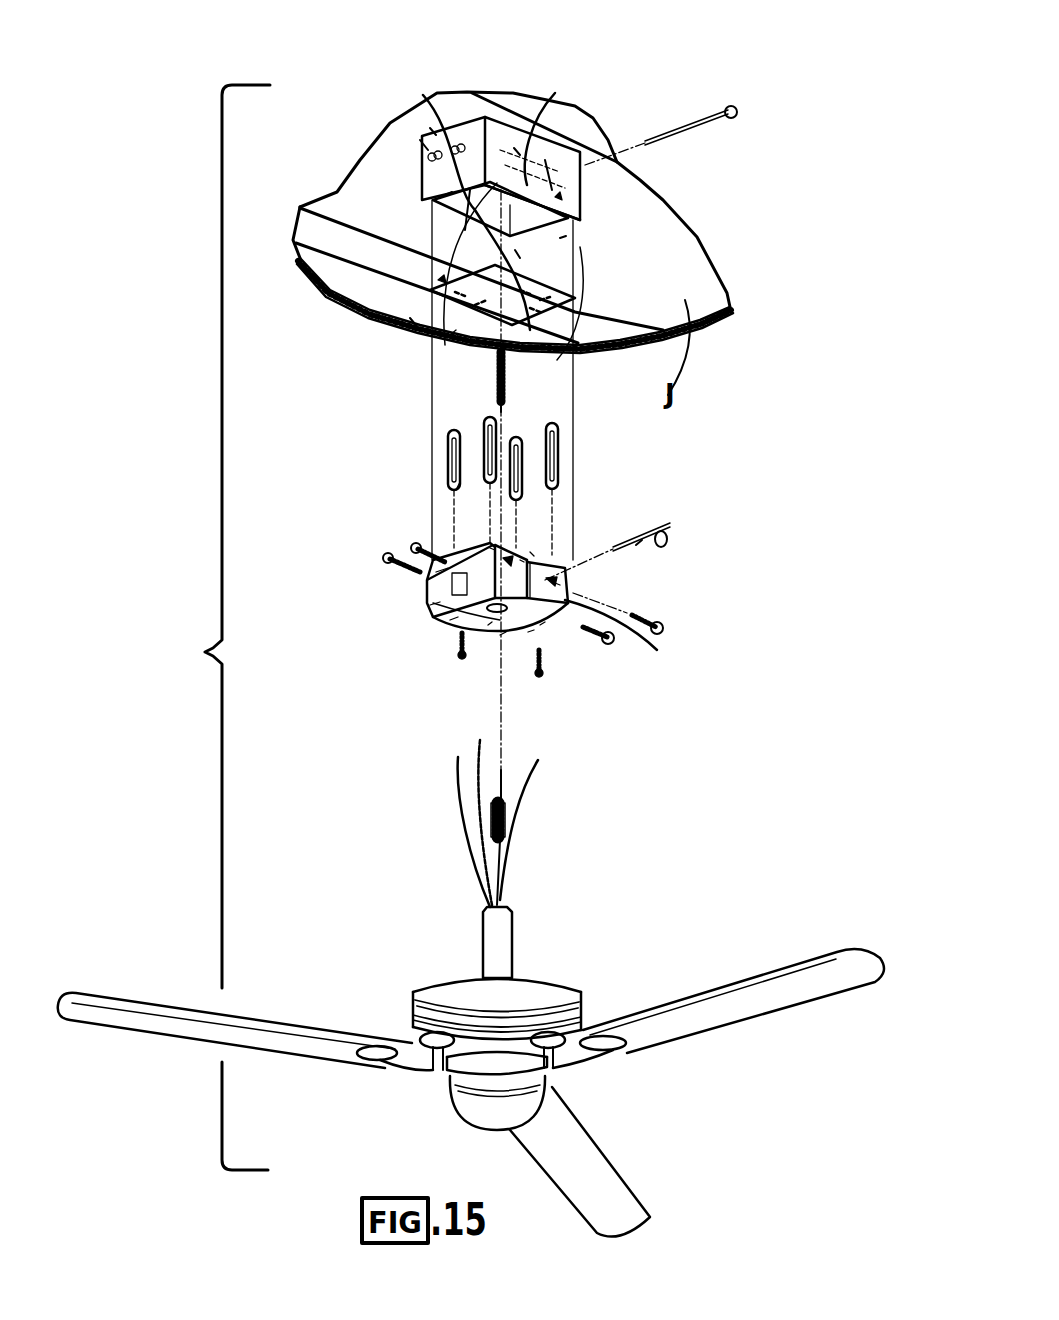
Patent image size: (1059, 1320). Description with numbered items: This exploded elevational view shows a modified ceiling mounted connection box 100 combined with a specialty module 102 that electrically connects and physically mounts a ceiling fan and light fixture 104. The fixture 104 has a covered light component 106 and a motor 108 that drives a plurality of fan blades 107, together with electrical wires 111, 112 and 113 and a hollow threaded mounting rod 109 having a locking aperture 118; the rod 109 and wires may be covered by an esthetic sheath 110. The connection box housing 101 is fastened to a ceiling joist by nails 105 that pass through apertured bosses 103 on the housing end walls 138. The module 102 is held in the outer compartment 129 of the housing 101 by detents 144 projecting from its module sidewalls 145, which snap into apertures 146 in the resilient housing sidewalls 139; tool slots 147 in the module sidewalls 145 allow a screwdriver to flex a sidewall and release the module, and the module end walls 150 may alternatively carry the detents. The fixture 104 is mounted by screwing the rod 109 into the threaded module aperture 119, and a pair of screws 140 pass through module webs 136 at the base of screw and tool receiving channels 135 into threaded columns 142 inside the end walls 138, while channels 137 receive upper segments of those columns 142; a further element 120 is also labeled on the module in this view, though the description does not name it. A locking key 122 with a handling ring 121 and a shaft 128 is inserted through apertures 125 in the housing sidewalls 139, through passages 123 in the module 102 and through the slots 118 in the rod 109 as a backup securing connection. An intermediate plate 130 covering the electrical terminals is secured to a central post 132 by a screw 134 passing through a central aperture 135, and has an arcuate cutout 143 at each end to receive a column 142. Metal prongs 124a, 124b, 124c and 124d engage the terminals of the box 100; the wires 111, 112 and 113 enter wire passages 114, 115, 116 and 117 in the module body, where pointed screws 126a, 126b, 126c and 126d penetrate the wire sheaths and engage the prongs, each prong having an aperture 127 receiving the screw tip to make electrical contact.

The ceiling mounted connection box 100 is at (617, 167).
The connection box housing 101 is at (472, 112).
The specialty module 102 is at (690, 490).
The apertured bosses 103 is at (428, 160).
The ceiling fan and light fixture 104 is at (568, 965).
The nails 105 is at (690, 122).
The covered light component 106 is at (538, 1092).
The fan blades 107 is at (680, 1042).
The motor 108 is at (427, 998).
The threaded mounting rod 109 is at (503, 862).
The esthetic sheath 110 is at (483, 930).
The electrical wire 111 is at (475, 870).
The electrical wire 112 is at (470, 790).
The electrical wire 113 is at (530, 806).
The wire passage 114 is at (488, 625).
The wire passage 115 is at (490, 548).
The wire passage 116 is at (500, 638).
The wire passage 117 is at (540, 625).
The locking aperture 118 is at (508, 818).
The threaded module aperture 119 is at (492, 614).
The bracket lip 120 is at (450, 620).
The handling ring 121 is at (665, 548).
The locking key 122 is at (672, 530).
The passages 123 is at (520, 560).
The metal prong 124a is at (484, 430).
The metal prong 124b is at (446, 462).
The metal prong 124c is at (528, 445).
The metal prong 124d is at (560, 445).
The apertures 125 is at (432, 128).
The screw 126a is at (412, 548).
The screw 126b is at (385, 552).
The screw 126c is at (610, 645).
The screw 126d is at (662, 620).
The aperture 127 is at (455, 482).
The shaft 128 is at (645, 540).
The outer compartment 129 is at (548, 322).
The intermediate plate 130 is at (565, 293).
The central post 132 is at (578, 216).
The screw 134 is at (495, 375).
The screw and tool receiving channel 135 is at (455, 335).
The module webs 136 is at (430, 605).
The channels 137 is at (436, 572).
The housing end walls 138 is at (420, 140).
The housing sidewalls 139 is at (552, 128).
The screws 140 is at (458, 660).
The columns 142 is at (445, 195).
The arcuate cutout 143 is at (415, 322).
The detents 144 is at (530, 552).
The module sidewalls 145 is at (645, 650).
The apertures 146 is at (560, 197).
The tool slots 147 is at (528, 636).
The module end walls 150 is at (452, 585).